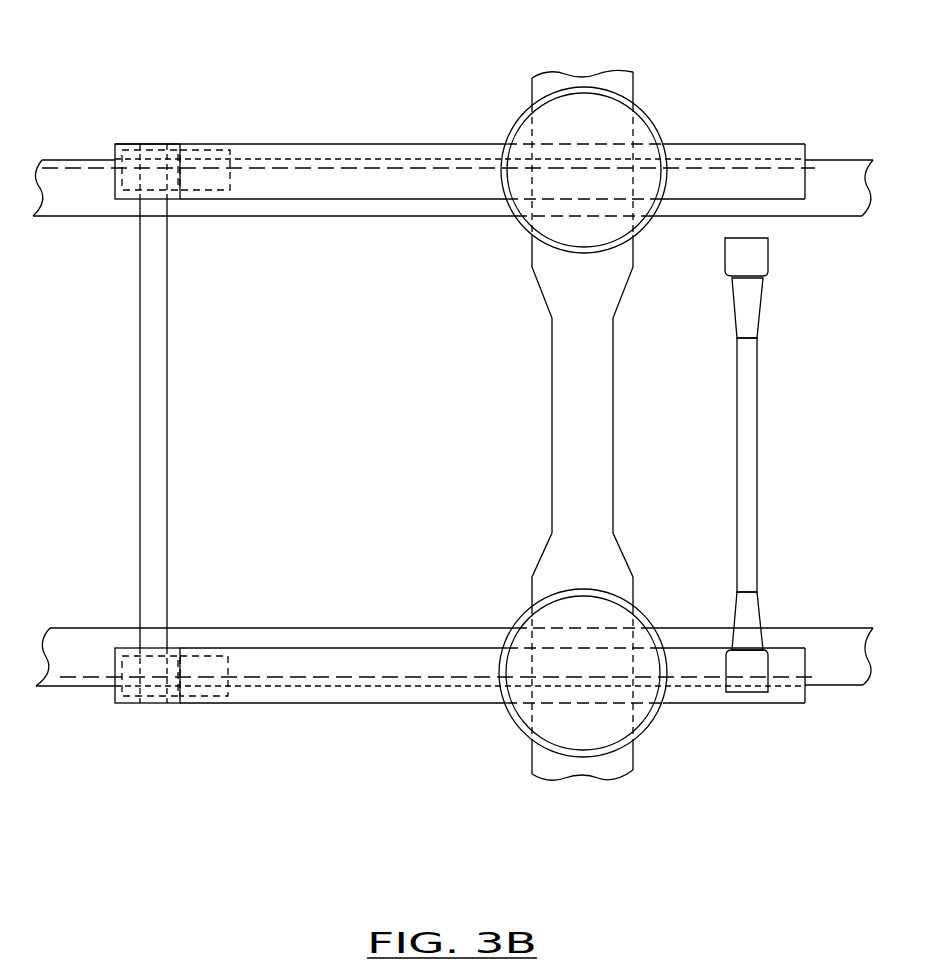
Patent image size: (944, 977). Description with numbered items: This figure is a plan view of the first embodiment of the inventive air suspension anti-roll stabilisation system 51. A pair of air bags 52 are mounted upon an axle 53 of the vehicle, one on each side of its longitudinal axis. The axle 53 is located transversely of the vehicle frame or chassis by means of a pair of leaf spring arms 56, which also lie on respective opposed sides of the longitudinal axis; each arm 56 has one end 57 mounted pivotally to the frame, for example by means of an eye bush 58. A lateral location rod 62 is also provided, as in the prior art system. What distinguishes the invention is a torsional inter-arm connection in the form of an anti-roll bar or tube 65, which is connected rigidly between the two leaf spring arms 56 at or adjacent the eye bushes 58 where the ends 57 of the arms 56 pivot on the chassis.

The air suspension anti-roll stabilisation system 51 is at (380, 100).
The air bag 52 is at (543, 112).
The axle 53 is at (590, 412).
The leaf spring arm 56 is at (358, 187).
The end of the arm 57 is at (158, 146).
The eye bush 58 is at (180, 150).
The lateral location rod 62 is at (748, 417).
The anti-roll bar or tube 65 is at (167, 393).